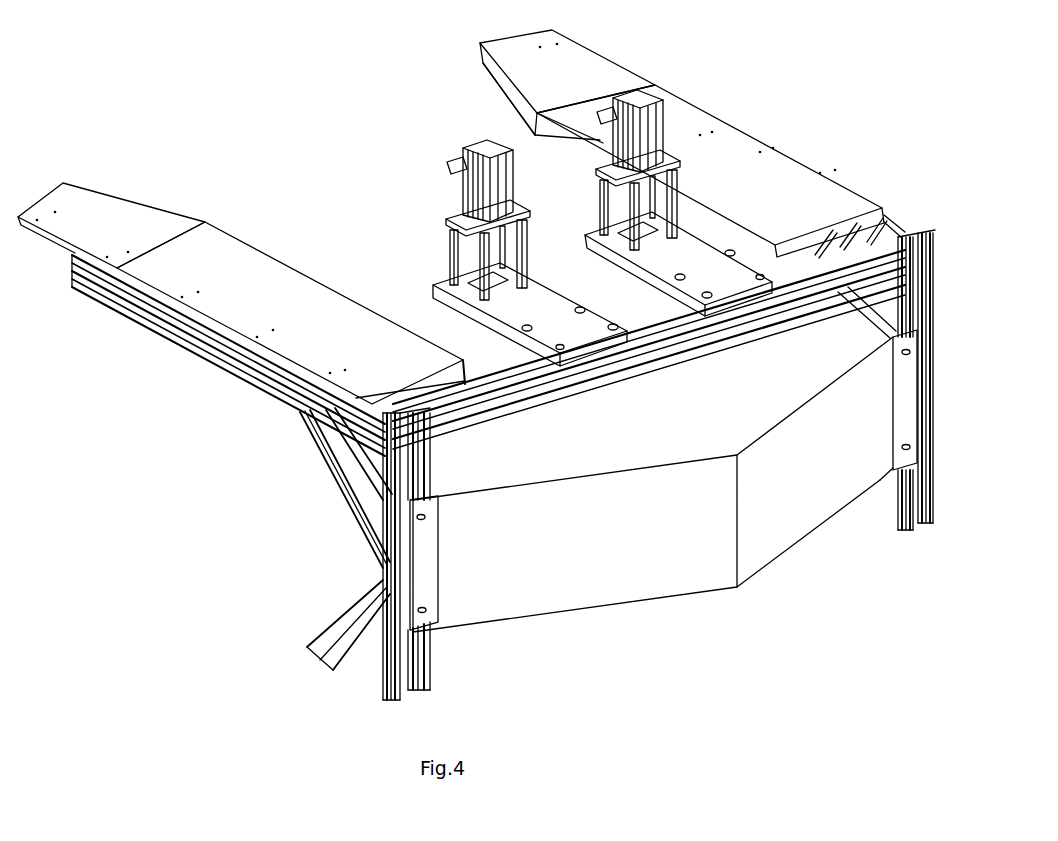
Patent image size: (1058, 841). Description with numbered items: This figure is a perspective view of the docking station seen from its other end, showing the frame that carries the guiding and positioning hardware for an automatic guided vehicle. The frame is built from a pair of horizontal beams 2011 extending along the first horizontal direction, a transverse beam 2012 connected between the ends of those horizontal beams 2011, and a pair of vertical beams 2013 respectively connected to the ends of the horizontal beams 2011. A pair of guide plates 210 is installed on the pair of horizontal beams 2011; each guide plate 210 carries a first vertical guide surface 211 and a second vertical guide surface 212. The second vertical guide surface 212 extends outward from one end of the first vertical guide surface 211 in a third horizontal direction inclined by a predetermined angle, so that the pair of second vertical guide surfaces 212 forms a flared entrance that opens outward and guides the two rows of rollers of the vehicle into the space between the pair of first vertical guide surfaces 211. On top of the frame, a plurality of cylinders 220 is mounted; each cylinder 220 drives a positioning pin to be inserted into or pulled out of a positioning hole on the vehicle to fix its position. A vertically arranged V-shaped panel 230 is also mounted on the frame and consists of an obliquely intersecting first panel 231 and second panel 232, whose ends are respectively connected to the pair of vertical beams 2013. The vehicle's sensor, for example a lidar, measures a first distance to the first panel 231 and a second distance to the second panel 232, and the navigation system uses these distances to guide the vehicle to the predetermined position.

The guide plate 210 is at (451, 218).
The first vertical guide surface 211 is at (325, 275).
The second vertical guide surface 212 is at (163, 207).
The cylinder 220 is at (457, 190).
The V-shaped panel 230 is at (663, 519).
The first panel 231 is at (582, 583).
The second panel 232 is at (793, 530).
The horizontal beam 2011 is at (233, 377).
The transverse beam 2012 is at (687, 367).
The vertical beam 2013 is at (350, 507).